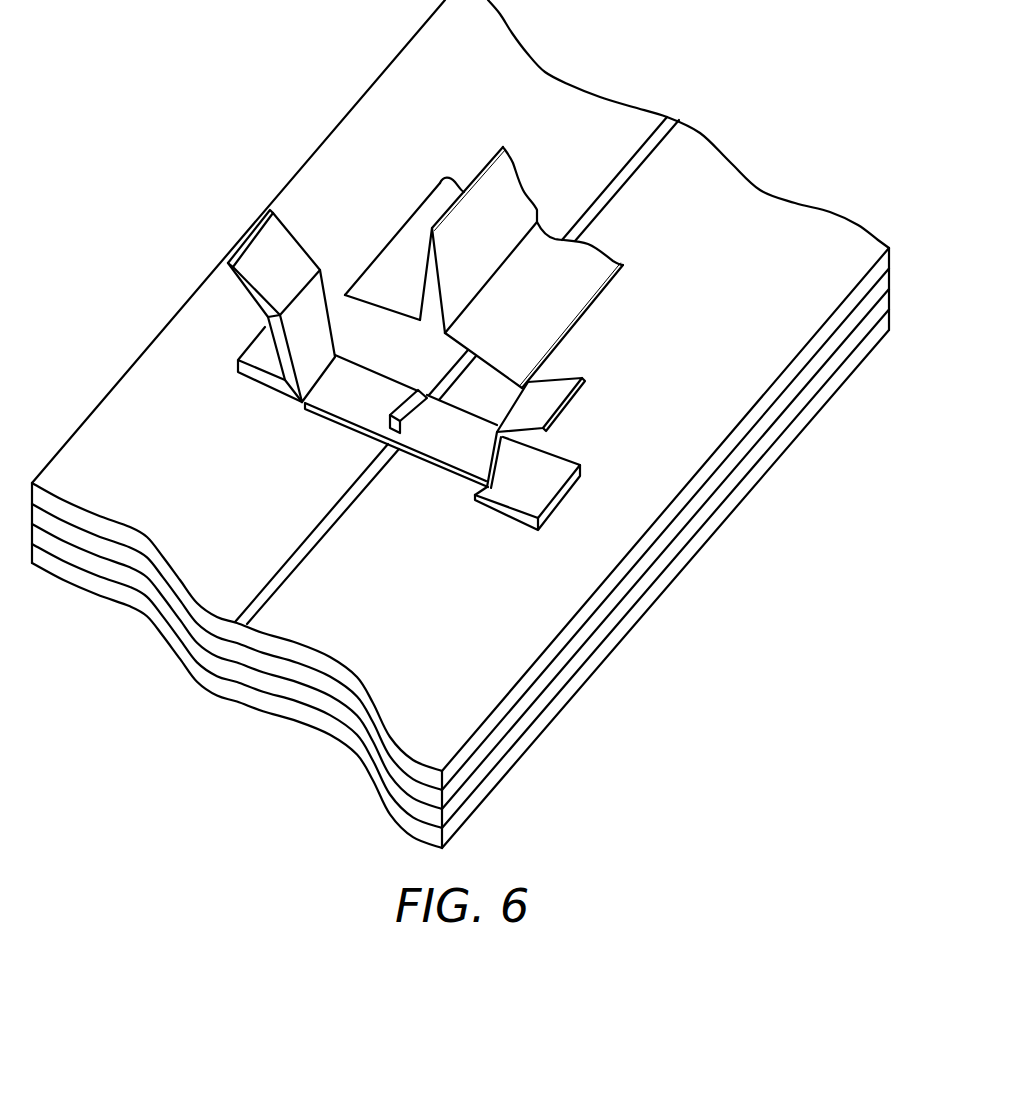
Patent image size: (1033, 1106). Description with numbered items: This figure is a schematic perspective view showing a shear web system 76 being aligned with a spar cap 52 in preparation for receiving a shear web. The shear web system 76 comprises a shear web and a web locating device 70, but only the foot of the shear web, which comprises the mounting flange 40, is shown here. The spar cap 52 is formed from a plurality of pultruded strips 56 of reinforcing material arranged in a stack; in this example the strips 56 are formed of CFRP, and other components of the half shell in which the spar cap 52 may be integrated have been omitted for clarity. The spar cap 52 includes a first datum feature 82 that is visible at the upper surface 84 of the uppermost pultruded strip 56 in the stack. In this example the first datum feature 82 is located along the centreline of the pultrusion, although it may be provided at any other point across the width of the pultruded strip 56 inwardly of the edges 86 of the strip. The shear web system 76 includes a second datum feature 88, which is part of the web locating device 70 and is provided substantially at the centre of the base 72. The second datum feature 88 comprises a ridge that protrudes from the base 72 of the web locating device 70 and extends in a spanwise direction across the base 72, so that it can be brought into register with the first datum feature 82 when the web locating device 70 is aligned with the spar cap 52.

The mounting flange 40 is at (594, 271).
The spar cap 52 is at (668, 603).
The pultruded strips 56 is at (733, 482).
The web locating device 70 is at (553, 397).
The base 72 is at (455, 453).
The shear web system 76 is at (364, 220).
The first datum feature 82 is at (317, 533).
The surface 84 is at (118, 414).
The edges 86 is at (330, 118).
The second datum feature 88 is at (393, 417).